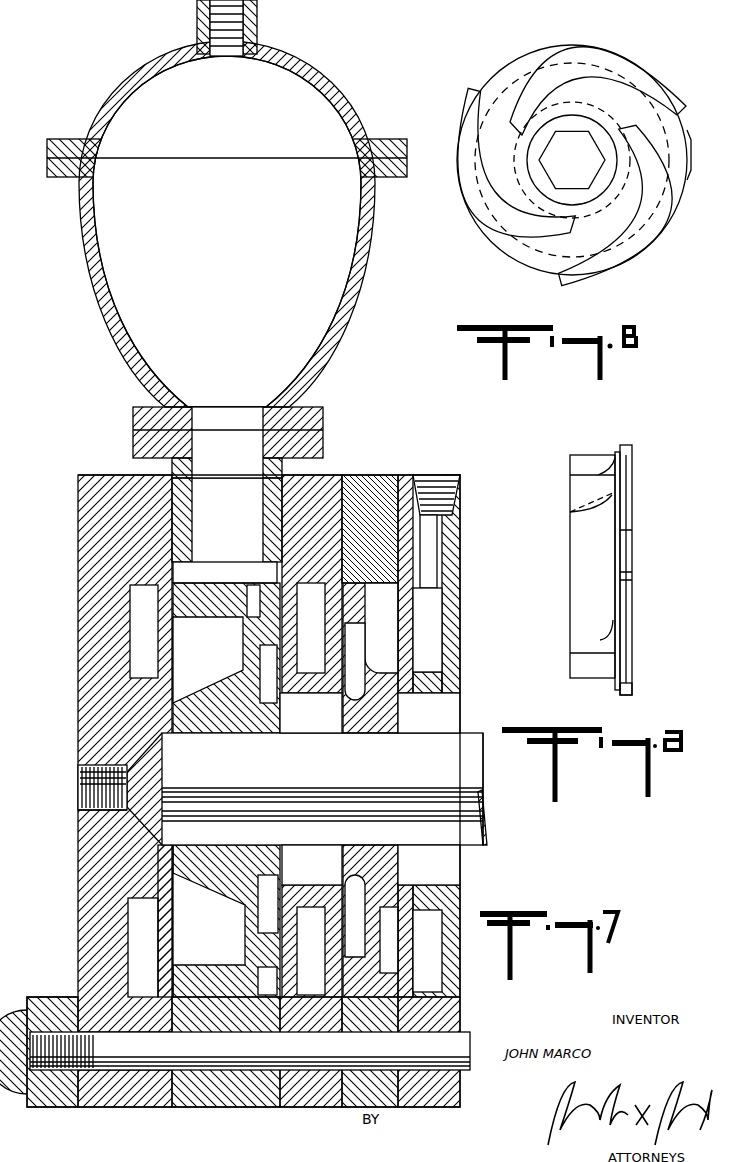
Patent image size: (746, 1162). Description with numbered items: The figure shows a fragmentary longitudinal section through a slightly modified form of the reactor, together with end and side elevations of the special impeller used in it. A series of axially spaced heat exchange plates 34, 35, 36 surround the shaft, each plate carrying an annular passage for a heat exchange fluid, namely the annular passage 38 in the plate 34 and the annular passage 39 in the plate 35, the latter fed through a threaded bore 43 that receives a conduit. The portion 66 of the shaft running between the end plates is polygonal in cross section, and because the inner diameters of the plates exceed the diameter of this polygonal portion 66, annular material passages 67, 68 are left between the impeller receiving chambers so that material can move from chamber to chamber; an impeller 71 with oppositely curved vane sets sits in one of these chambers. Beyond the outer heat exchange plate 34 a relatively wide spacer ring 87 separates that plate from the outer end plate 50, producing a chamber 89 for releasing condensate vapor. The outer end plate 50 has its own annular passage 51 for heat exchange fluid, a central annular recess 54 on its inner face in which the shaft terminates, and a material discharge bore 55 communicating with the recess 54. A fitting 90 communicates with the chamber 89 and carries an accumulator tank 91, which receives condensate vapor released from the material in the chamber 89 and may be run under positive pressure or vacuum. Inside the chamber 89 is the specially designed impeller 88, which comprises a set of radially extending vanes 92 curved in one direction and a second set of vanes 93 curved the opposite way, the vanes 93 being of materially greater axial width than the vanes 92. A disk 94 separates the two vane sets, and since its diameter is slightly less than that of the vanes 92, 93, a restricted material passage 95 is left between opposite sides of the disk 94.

In FIG. 7, the accumulator tank 91 is at (202, 24).
In FIG. 7, the fitting 90 is at (133, 444).
In FIG. 7, the outer end plate 50 is at (80, 526).
In FIG. 7, the annular passage 51 is at (130, 643).
In FIG. 7, the impeller 88 is at (237, 741).
In FIG. 8, the impeller 88 is at (564, 207).
In FIG. 9, the impeller 88 is at (563, 680).
In FIG. 7, the chamber 89 is at (209, 939).
In FIG. 7, the heat exchange plate 34 is at (333, 474).
In FIG. 7, the annular passage 38 is at (320, 633).
In FIG. 7, the annular material passage 67 is at (321, 725).
In FIG. 7, the heat exchange plate 36 is at (383, 473).
In FIG. 7, the impeller 71 is at (384, 733).
In FIG. 7, the heat exchange plate 35 is at (460, 475).
In FIG. 7, the bore 43 is at (438, 545).
In FIG. 7, the annular passage 39 is at (441, 627).
In FIG. 7, the annular material passage 68 is at (436, 725).
In FIG. 7, the polygonal portion of shaft 66 is at (478, 847).
In FIG. 7, the annular recess 54 is at (124, 745).
In FIG. 7, the material discharge bore 55 is at (80, 804).
In FIG. 7, the spacer ring 87 is at (236, 1108).
In FIG. 8, the restricted material passage 95 is at (613, 91).
In FIG. 8, the disk 94 is at (619, 217).
In FIG. 8, the vanes 93 is at (499, 172).
In FIG. 8, the vanes 92 is at (705, 155).
In FIG. 9, the vanes 92 is at (630, 449).